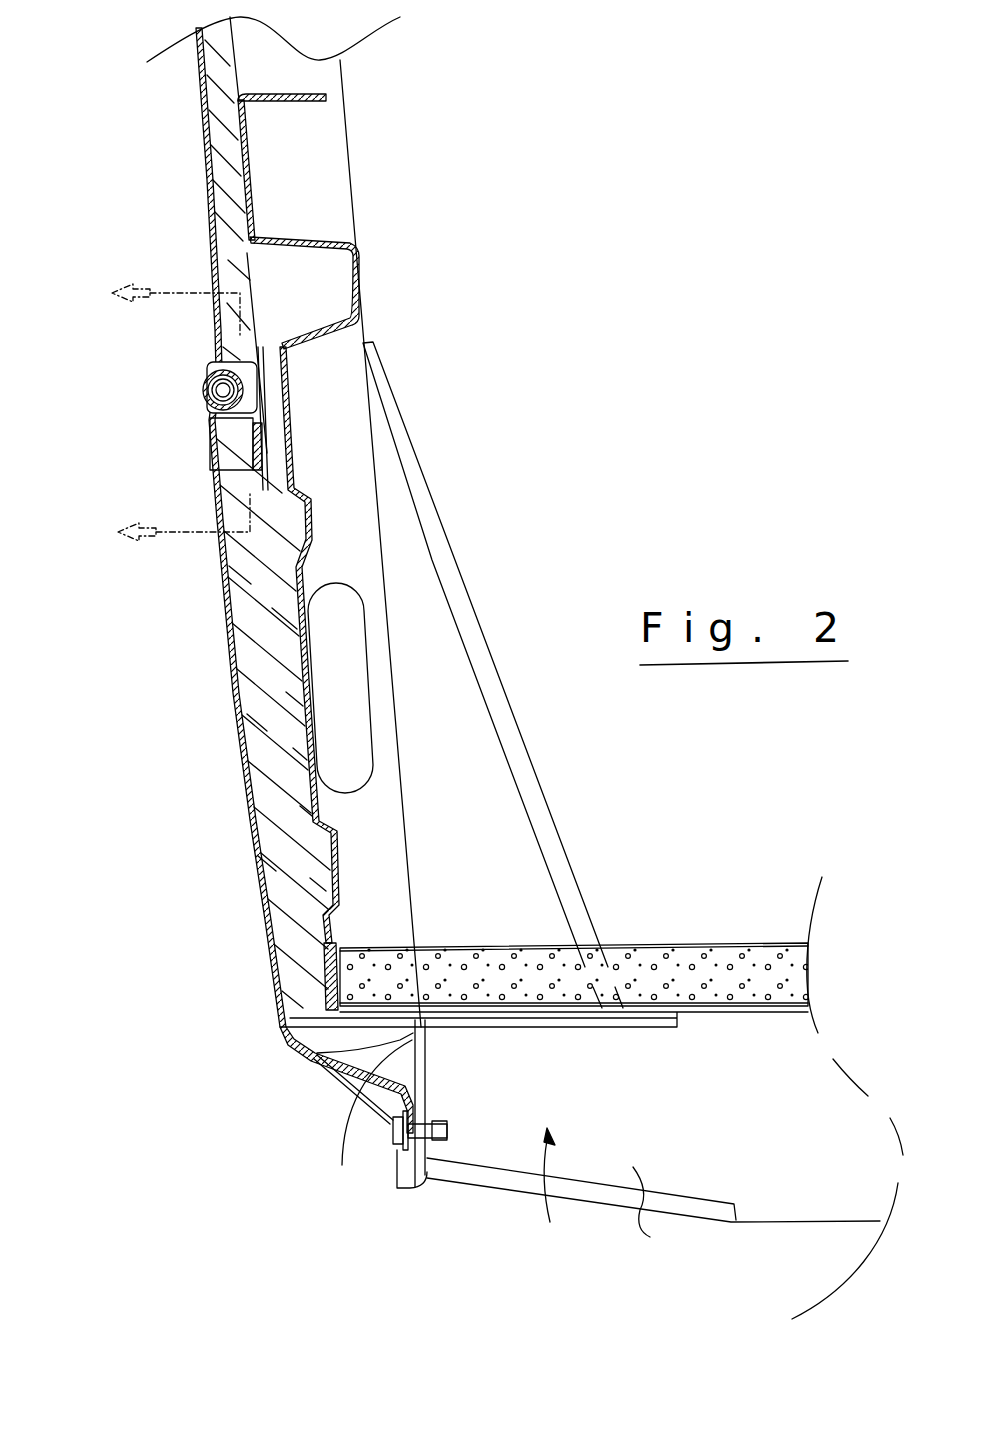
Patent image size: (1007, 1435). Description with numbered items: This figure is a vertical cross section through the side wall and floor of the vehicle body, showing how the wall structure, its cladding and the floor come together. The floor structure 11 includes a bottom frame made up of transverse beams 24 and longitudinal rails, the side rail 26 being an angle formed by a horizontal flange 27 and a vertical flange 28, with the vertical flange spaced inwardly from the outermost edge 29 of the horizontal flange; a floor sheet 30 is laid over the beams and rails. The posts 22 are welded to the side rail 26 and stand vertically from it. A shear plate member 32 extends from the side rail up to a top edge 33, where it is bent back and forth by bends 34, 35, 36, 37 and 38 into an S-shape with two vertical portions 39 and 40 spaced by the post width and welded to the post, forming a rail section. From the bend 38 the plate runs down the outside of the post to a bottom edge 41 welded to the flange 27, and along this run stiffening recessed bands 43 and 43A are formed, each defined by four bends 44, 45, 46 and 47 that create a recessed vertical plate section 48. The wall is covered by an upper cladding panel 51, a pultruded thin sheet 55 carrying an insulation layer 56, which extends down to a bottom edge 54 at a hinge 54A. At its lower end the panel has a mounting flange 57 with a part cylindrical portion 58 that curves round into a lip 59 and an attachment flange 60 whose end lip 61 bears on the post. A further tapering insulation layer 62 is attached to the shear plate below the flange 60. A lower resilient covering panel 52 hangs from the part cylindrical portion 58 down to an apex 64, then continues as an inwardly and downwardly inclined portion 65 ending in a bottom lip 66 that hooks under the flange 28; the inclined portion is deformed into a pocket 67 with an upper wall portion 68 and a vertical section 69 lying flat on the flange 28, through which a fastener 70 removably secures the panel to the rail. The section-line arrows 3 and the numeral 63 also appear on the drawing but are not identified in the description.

The section line 3 is at (169, 417).
The floor structure 11 is at (549, 1194).
The post 22 is at (305, 180).
The transverse beams 24 is at (653, 1216).
The side rail 26 is at (428, 1052).
The horizontal flange 27 is at (465, 975).
The vertical flange 28 is at (428, 1080).
The outermost edge 29 is at (315, 1057).
The floor sheet 30 is at (726, 945).
The shear plate member 32 is at (322, 545).
The top edge 33 is at (297, 90).
The bend 34 is at (238, 104).
The bend 35 is at (250, 240).
The bend 36 is at (352, 247).
The bend 37 is at (362, 325).
The bend 38 is at (263, 347).
The vertical portion 39 is at (217, 172).
The vertical portion 40 is at (360, 290).
The bottom edge 41 is at (341, 1010).
The recessed section band 43 is at (305, 500).
The recessed section band 43A is at (330, 840).
The bend 44 is at (330, 470).
The bend 45 is at (280, 474).
The bend 46 is at (312, 553).
The bend 47 is at (313, 573).
The vertical plate section 48 is at (310, 515).
The upper cladding panel 51 is at (215, 270).
The lower resilient covering panel 52 is at (225, 630).
The bottom edge 54 is at (185, 381).
The hinge 54A is at (200, 370).
The thin sheet 55 is at (197, 70).
The layer of insulation material 56 is at (205, 103).
The mounting flange 57 is at (272, 364).
The part cylindrical portion 58 is at (258, 402).
The lip 59 is at (220, 416).
The attachment flange 60 is at (300, 435).
The end lip 61 is at (300, 462).
The layer of insulation 62 is at (305, 690).
The outer skin 63 is at (215, 560).
The apex 64 is at (285, 1027).
The inclined portion 65 is at (347, 1080).
The bottom lip 66 is at (400, 1183).
The pocket 67 is at (342, 1165).
The upper wall portion 68 is at (415, 1035).
The vertical section 69 is at (440, 1122).
The fastener 70 is at (428, 1163).